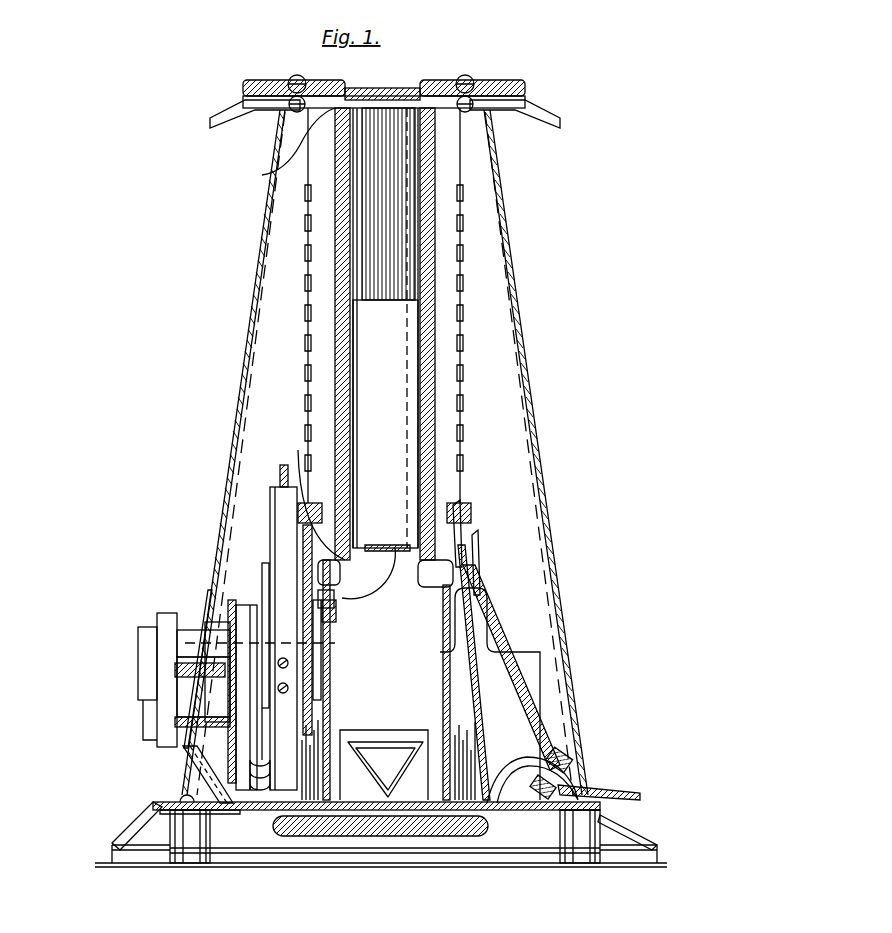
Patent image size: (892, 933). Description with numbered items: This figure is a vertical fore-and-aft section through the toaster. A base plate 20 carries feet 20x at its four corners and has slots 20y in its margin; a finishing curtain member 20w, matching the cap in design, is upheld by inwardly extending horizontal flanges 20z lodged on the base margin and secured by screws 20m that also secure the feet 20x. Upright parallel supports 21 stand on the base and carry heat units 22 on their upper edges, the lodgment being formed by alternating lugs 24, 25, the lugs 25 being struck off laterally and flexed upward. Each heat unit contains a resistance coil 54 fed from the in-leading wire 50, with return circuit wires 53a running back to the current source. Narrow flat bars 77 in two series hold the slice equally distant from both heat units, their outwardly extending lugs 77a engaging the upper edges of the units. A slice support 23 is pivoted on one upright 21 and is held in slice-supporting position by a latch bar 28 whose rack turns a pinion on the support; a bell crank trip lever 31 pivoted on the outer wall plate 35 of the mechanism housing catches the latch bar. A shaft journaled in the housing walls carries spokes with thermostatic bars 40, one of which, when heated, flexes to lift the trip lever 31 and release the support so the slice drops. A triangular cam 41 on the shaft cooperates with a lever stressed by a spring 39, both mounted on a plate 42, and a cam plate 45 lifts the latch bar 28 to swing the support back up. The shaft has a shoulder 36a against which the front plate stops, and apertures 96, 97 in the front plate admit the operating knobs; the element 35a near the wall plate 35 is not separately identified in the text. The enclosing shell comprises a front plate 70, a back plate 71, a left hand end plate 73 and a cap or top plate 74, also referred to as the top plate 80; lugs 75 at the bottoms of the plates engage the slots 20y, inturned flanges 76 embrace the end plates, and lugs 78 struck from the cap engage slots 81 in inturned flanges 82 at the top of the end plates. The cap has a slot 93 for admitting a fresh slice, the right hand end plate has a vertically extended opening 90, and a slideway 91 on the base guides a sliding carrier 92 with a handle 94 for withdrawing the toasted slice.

The base plate 20 is at (388, 815).
The screws 20m is at (188, 800).
The finishing curtain member 20w is at (150, 832).
The feet 20x is at (180, 855).
The slots 20y is at (215, 838).
The horizontal flanges 20z is at (160, 803).
The parallel supports 21 is at (488, 655).
The heat units 22 is at (305, 262).
The slice support 23 is at (380, 545).
The lugs 24 is at (345, 575).
The lugs 25 is at (325, 600).
The latch bar 28 is at (333, 612).
The bell crank trip lever 31 is at (282, 478).
The outer wall plate 35 is at (220, 625).
The coupling part 35a is at (205, 625).
The shoulder 36a is at (195, 665).
The spring 39 is at (240, 795).
The thermostatic bar 40 is at (278, 522).
The polygonal cam 41 is at (263, 562).
The plate 42 is at (248, 605).
The cam plate 45 is at (325, 648).
The in-leading wire 50 is at (330, 812).
The return circuit wires 53a is at (590, 790).
The resistance coils 54 is at (298, 500).
The front plate 70 is at (254, 305).
The back plate 71 is at (528, 362).
The left hand end plate 73 is at (445, 95).
The cap or top plate 74 is at (290, 82).
The lugs 75 is at (208, 810).
The inturned flanges 76 is at (252, 339).
The narrow flat bars 77 is at (338, 365).
The outwardly extending lugs 77a is at (243, 118).
The lugs 78 is at (388, 100).
The cap or top plate 80 is at (243, 101).
The slots 81 is at (410, 100).
The inturned flanges 82 is at (262, 175).
The vertically extended opening 90 is at (418, 645).
The slideway 91 is at (472, 820).
The sliding carrier 92 is at (355, 805).
The slot 93 is at (368, 90).
The handle 94 is at (396, 768).
The aperture 96 is at (138, 657).
The aperture 97 is at (228, 640).